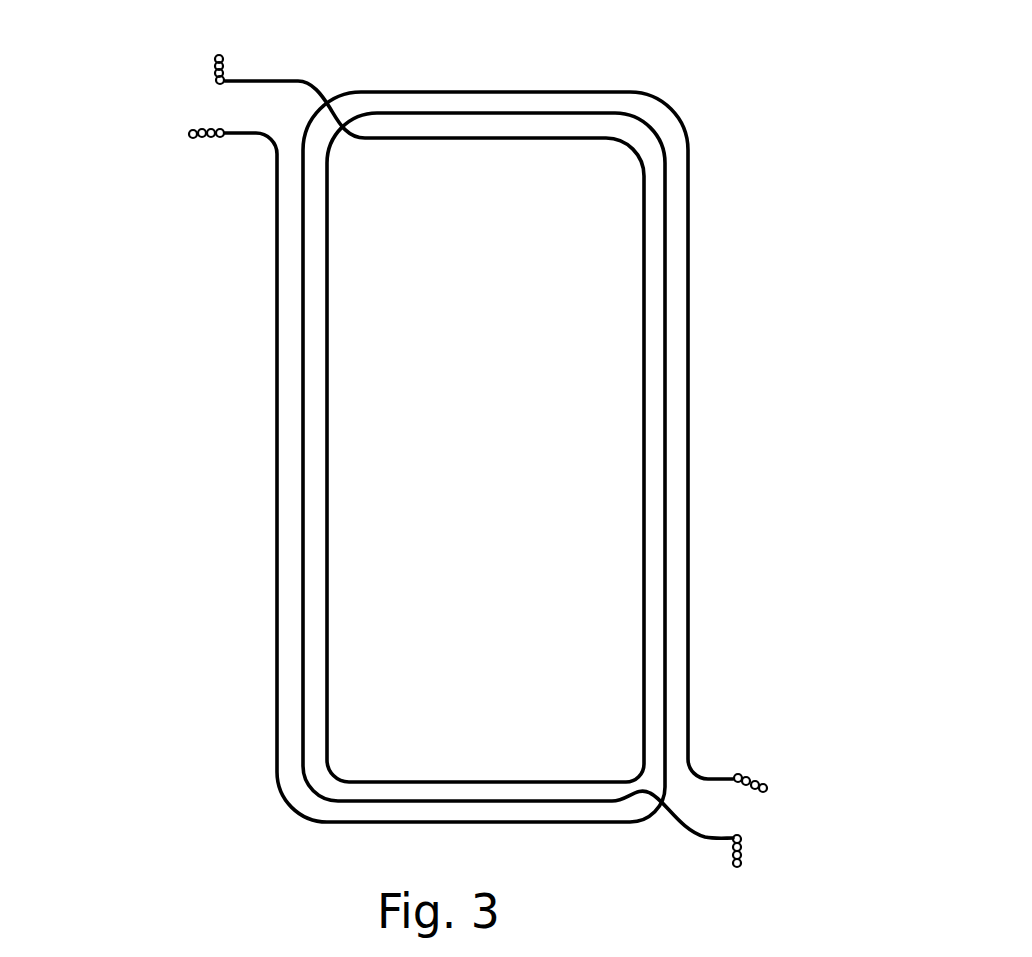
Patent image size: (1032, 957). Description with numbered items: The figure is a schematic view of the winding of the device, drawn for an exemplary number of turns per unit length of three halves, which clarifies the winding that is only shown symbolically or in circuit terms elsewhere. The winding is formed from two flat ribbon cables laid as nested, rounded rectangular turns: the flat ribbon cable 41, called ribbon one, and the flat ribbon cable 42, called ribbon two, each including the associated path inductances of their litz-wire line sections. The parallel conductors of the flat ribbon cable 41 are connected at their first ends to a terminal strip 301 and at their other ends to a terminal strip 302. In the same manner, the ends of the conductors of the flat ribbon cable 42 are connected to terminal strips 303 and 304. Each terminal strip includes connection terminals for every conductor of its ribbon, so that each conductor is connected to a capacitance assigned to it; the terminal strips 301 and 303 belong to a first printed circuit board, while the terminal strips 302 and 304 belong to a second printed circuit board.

The flat ribbon cable 41 is at (640, 280).
The flat ribbon cable 42 is at (270, 262).
The terminal strip 301 is at (765, 772).
The terminal strip 302 is at (207, 67).
The terminal strip 303 is at (748, 857).
The terminal strip 304 is at (176, 129).